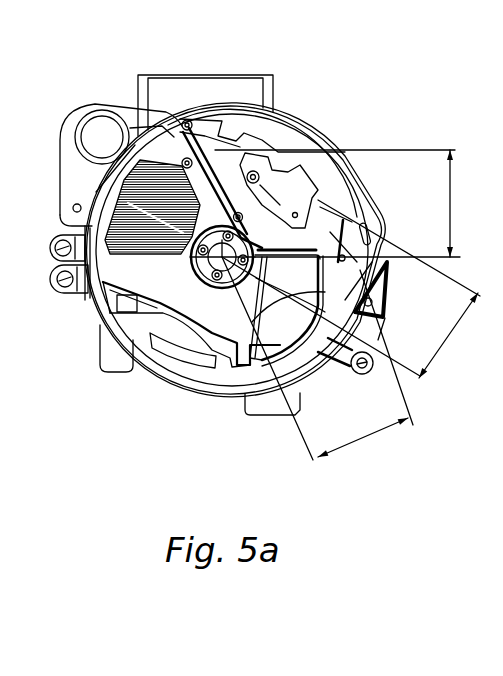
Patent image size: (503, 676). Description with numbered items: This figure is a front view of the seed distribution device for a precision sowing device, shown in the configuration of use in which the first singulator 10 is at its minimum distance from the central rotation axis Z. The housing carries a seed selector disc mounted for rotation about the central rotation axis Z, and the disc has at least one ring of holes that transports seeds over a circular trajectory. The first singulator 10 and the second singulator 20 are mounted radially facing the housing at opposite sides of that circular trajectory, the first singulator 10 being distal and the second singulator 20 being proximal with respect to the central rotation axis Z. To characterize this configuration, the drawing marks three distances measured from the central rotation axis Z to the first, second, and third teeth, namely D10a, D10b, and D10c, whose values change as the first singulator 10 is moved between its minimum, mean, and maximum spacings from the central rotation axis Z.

The first singulator 10 is at (288, 140).
The second singulator 20 is at (293, 203).
The central rotation axis Z is at (205, 280).
The distance of first tooth from central rotation axis D10a is at (450, 229).
The distance of second tooth from central rotation axis D10b is at (440, 350).
The distance of third tooth from central rotation axis D10c is at (362, 440).